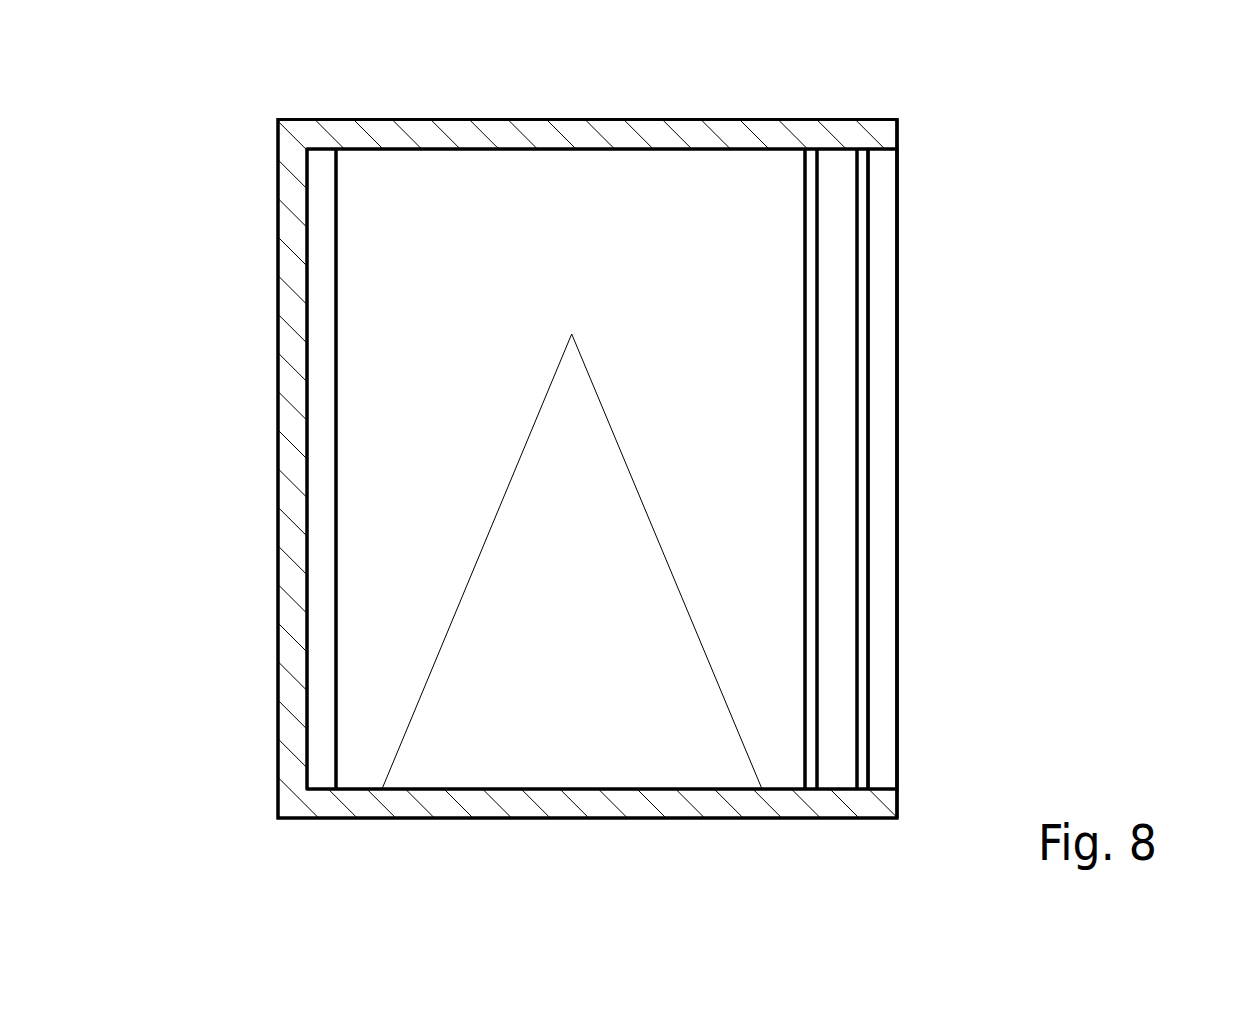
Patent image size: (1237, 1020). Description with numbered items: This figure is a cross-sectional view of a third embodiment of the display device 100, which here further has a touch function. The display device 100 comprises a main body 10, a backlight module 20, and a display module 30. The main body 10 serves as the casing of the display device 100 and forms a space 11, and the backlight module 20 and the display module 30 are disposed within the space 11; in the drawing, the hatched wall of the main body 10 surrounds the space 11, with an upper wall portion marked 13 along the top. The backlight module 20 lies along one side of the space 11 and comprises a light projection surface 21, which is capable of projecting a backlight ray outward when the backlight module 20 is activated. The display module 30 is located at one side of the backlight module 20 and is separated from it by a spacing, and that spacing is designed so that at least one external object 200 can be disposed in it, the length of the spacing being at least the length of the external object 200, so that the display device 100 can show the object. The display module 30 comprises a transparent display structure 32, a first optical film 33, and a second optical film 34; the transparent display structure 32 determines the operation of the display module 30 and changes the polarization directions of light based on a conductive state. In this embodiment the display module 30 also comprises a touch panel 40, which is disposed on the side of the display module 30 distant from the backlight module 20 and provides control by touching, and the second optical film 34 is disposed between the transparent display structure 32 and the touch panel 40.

The display device 100 is at (1230, 92).
The main body 10 is at (482, 108).
The space 11 is at (360, 270).
The top wall 13 is at (632, 149).
The backlight module 20 is at (298, 567).
The light projection surface 21 is at (336, 367).
The external object 200 is at (407, 727).
The display module 30 is at (908, 41).
The first optical film 33 is at (811, 165).
The transparent display structure 32 is at (841, 166).
The second optical film 34 is at (866, 166).
The touch panel 40 is at (889, 450).